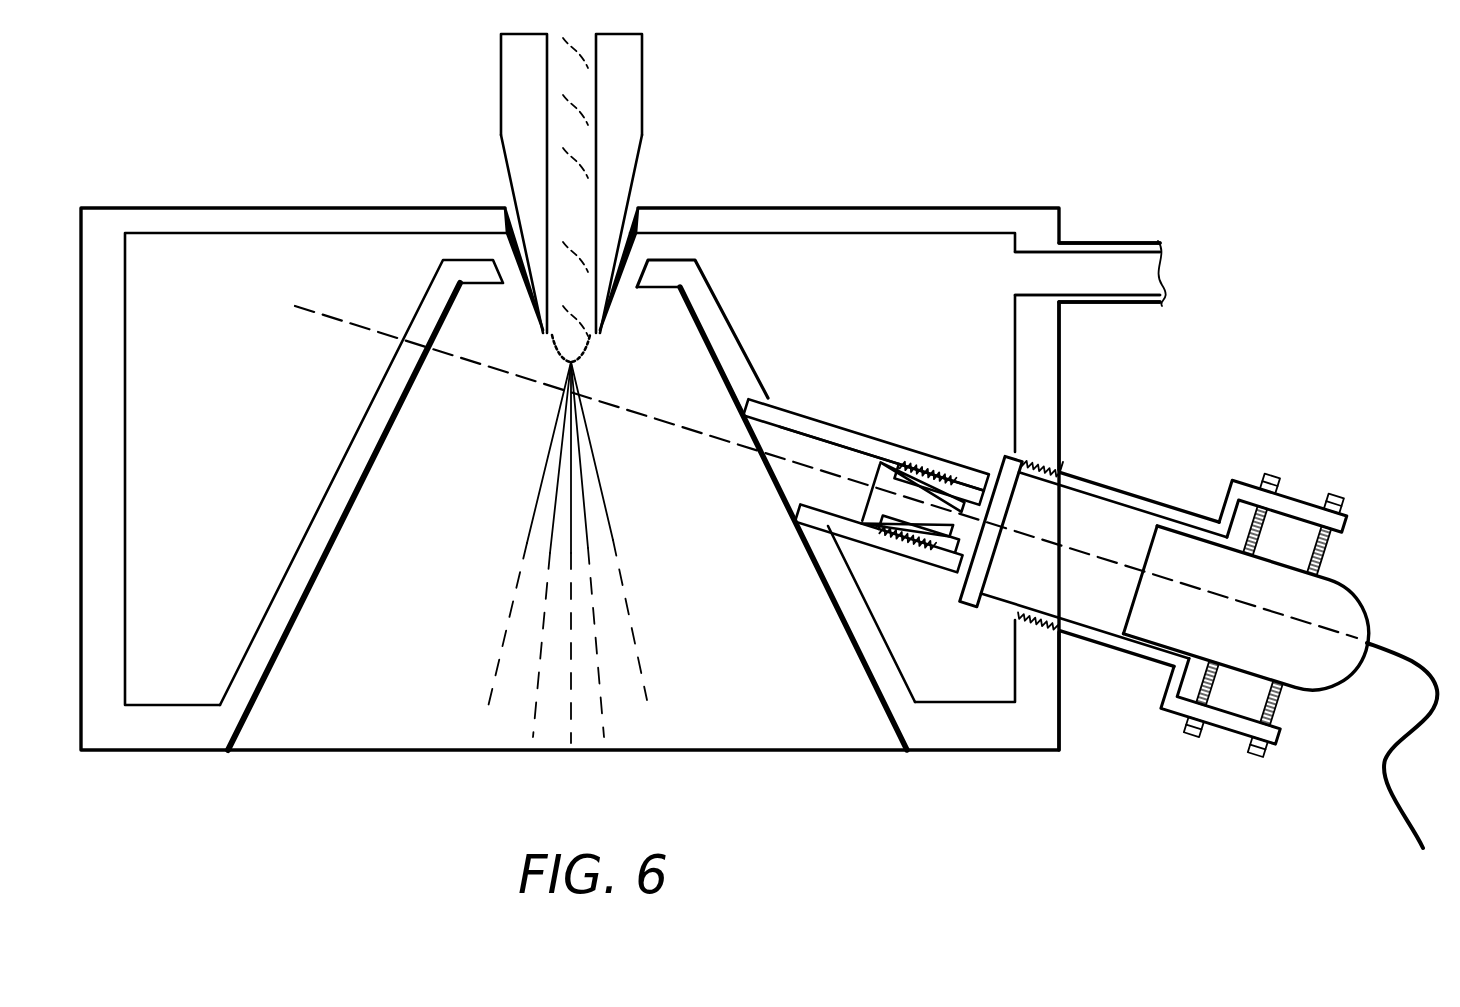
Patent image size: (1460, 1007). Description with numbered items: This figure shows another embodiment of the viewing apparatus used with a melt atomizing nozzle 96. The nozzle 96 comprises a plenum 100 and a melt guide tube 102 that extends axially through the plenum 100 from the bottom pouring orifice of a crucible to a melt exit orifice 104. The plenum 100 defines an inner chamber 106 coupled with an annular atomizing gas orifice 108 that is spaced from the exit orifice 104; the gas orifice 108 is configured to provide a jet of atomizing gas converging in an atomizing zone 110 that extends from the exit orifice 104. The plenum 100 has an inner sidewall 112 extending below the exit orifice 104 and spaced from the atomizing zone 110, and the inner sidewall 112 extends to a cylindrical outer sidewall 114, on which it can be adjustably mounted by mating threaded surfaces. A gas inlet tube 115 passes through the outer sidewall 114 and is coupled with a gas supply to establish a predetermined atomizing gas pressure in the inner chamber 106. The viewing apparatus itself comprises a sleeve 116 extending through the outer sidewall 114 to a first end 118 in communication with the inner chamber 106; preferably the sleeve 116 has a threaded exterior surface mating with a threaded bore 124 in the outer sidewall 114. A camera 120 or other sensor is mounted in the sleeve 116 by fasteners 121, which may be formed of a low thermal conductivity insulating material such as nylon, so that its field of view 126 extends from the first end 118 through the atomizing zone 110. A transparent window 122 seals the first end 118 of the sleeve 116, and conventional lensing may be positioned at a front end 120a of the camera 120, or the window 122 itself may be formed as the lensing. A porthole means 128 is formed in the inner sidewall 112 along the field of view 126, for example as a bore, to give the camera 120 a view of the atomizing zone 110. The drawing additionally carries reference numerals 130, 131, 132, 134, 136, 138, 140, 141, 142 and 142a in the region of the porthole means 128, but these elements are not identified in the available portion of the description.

The nozzle 96 is at (832, 95).
The plenum 100 is at (880, 208).
The melt guide tube 102 is at (641, 96).
The melt exit orifice 104 is at (602, 338).
The inner chamber 106 is at (240, 487).
The annular atomizing gas orifice 108 is at (624, 282).
The atomizing zone 110 is at (560, 378).
The inner sidewall 112 is at (864, 642).
The cylindrical outer sidewall 114 is at (1045, 410).
The gas inlet tube 115 is at (1127, 246).
The sleeve 116 is at (1114, 500).
The first end 118 is at (1006, 458).
The camera 120 is at (1348, 578).
The front end 120a is at (1148, 592).
The fasteners 121 is at (1270, 468).
The transparent window 122 is at (998, 572).
The threaded bore 124 is at (1068, 452).
The field of view 126 is at (690, 432).
The porthole means 128 is at (774, 392).
The upper blade 130 is at (803, 416).
The blade lower surface 131 is at (862, 452).
The upper thread 132 is at (893, 447).
The upper insert 134 is at (958, 464).
The lower blade 136 is at (871, 543).
The lower insert 138 is at (982, 562).
The lower thread 140 is at (943, 558).
The gap 141 is at (852, 480).
The upper wedge 142 is at (902, 472).
The lower wedge 142a is at (918, 514).